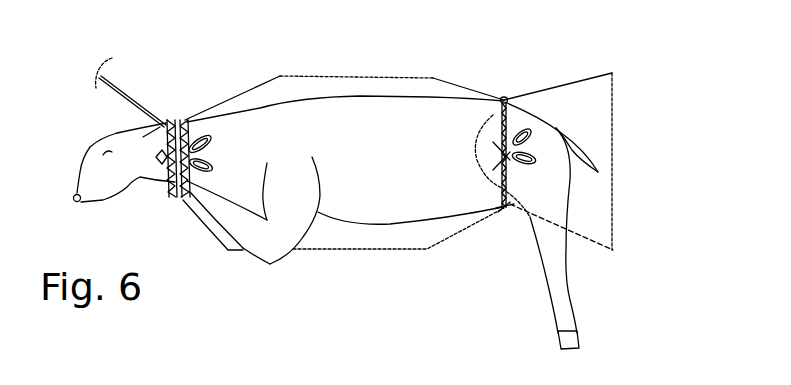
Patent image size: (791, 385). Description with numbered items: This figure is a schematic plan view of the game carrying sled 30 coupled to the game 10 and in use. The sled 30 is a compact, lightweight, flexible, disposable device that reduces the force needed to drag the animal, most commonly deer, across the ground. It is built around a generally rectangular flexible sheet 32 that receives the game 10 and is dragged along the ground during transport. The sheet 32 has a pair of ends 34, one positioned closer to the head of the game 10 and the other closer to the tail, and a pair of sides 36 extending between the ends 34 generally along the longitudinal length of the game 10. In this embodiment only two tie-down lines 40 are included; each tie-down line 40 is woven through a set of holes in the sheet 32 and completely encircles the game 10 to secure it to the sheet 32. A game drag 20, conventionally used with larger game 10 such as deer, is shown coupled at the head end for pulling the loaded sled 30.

The game 10 is at (398, 158).
The game drag 20 is at (127, 87).
The game carrying sled 30 is at (359, 46).
The flexible sheet 32 is at (437, 82).
The end 34 is at (612, 152).
The side 36 is at (297, 73).
The tie-down line 40 is at (505, 99).